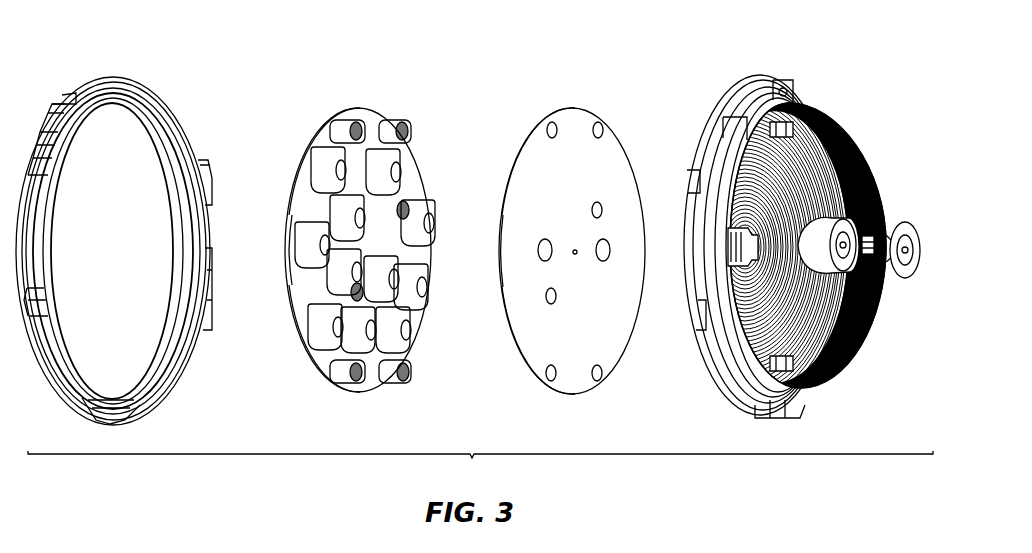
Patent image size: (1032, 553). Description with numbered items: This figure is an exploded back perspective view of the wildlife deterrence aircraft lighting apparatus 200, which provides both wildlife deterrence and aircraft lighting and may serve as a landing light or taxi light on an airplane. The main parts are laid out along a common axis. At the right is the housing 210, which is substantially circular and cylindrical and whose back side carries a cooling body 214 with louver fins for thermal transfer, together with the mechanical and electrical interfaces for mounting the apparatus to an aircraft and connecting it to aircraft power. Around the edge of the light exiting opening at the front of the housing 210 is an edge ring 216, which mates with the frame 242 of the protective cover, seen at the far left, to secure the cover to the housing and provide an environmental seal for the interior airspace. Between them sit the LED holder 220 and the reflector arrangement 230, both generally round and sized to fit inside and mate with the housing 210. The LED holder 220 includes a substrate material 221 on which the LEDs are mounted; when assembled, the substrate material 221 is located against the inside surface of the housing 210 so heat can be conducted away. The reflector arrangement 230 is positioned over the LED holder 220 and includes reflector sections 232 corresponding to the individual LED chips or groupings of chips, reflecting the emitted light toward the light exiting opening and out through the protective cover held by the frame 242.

The wildlife deterrence aircraft lighting apparatus 200 is at (480, 467).
The housing 210 is at (761, 240).
The cooling body 214 is at (859, 167).
The edge ring 216 is at (695, 335).
The LED holder 220 is at (585, 209).
The substrate material 221 is at (619, 146).
The reflector arrangement 230 is at (390, 206).
The reflector sections 232 is at (413, 167).
The frame 242 is at (167, 123).